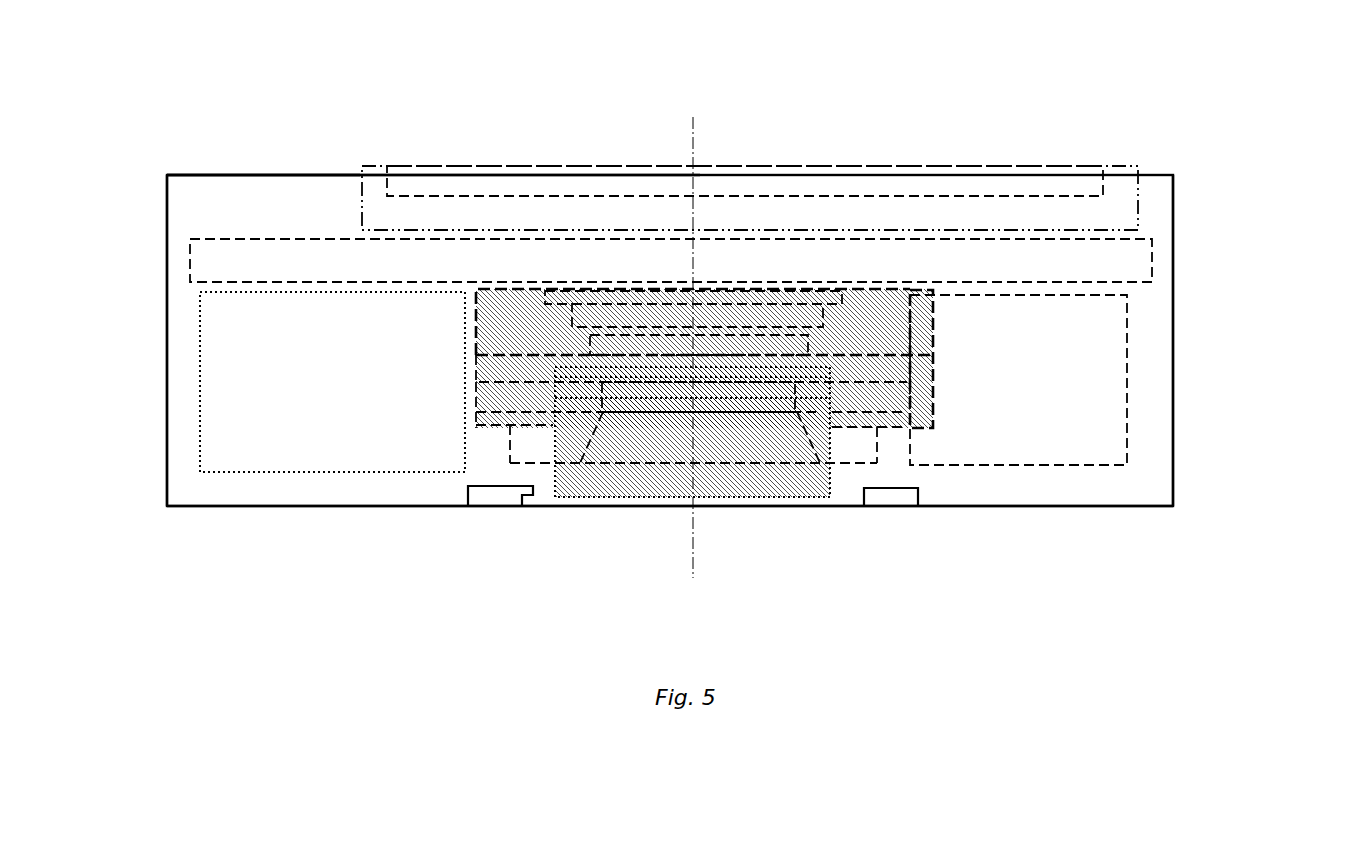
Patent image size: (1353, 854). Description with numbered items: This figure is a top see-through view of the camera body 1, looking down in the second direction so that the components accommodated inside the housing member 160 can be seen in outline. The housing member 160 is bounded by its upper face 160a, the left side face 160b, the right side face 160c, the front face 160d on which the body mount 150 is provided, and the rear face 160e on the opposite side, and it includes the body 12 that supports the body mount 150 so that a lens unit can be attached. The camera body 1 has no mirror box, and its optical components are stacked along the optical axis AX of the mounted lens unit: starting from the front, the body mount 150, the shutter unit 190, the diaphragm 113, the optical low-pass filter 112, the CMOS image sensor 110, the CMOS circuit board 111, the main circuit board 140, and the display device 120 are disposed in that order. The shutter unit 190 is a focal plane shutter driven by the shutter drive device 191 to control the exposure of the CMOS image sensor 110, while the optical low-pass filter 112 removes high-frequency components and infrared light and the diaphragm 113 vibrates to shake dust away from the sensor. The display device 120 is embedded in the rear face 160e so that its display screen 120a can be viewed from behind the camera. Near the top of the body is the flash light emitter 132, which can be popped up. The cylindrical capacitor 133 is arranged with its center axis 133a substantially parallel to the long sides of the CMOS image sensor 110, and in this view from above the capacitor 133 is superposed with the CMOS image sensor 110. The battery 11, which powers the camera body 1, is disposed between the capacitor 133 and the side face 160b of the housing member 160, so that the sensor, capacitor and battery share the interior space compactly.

The camera body 1 is at (715, 140).
The battery 11 is at (282, 347).
The body 12 is at (855, 447).
The CMOS image sensor 110 is at (823, 320).
The CMOS circuit board 111 is at (842, 297).
The optical low-pass filter 112 is at (808, 345).
The diaphragm 113 is at (825, 372).
The display device 120 is at (885, 213).
The display screen 120a is at (1005, 193).
The flash light emitter 132 is at (602, 478).
The capacitor 133 is at (510, 362).
The center axis 133a is at (527, 355).
The main circuit board 140 is at (208, 265).
The body mount 150 is at (482, 498).
The housing member 160 is at (1177, 487).
The upper face 160a is at (198, 205).
The side face 160b is at (167, 323).
The side face 160c is at (1175, 213).
The front face 160d is at (1030, 507).
The rear face 160e is at (312, 175).
The shutter unit 190 is at (887, 397).
The shutter drive device 191 is at (1105, 442).
The optical axis AX is at (700, 556).